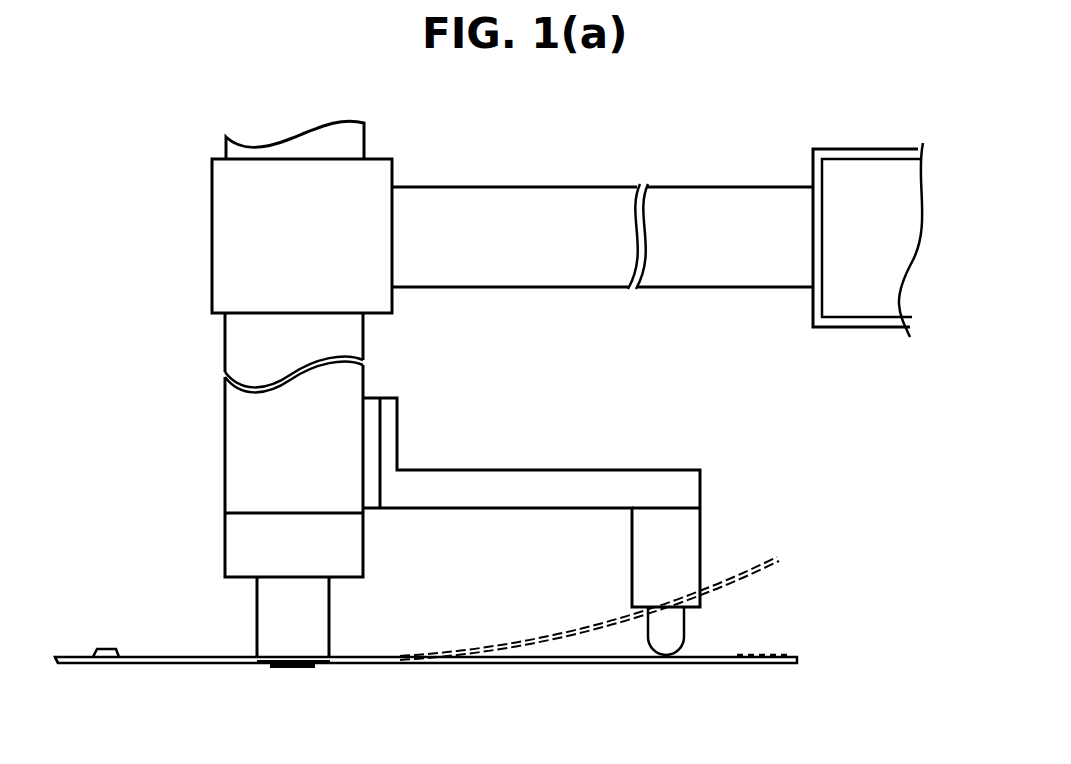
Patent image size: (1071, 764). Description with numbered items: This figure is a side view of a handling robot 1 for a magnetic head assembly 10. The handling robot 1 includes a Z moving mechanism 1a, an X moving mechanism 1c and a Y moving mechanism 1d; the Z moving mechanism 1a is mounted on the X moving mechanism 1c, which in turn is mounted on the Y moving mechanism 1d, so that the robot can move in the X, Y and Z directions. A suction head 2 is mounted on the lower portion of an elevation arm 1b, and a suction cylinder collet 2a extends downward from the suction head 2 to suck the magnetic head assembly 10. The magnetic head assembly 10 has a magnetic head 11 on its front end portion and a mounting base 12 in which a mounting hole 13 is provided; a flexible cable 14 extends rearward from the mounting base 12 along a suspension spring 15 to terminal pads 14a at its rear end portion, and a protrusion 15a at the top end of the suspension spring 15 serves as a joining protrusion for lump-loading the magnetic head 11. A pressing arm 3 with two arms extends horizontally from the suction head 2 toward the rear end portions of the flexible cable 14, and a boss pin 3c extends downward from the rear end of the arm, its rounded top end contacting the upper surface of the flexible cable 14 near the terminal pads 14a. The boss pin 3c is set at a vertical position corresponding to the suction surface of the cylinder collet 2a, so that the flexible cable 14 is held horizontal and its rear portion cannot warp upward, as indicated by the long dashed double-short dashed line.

The handling robot 1 is at (610, 153).
The Z moving mechanism 1a is at (231, 209).
The elevation arm 1b is at (238, 338).
The X moving mechanism 1c is at (758, 200).
The Y moving mechanism 1d is at (877, 170).
The suction head 2 is at (239, 420).
The suction cylinder collet 2a is at (243, 537).
The pressing arm 3 is at (512, 478).
The boss pin 3c is at (665, 647).
The magnetic head assembly 10 is at (153, 598).
The magnetic head 11 is at (107, 648).
The mounting base 12 is at (322, 670).
The mounting hole 13 is at (297, 670).
The flexible cable 14 is at (562, 657).
The terminal pad 14a is at (757, 655).
The suspension spring 15 is at (192, 665).
The protrusion 15a is at (73, 667).